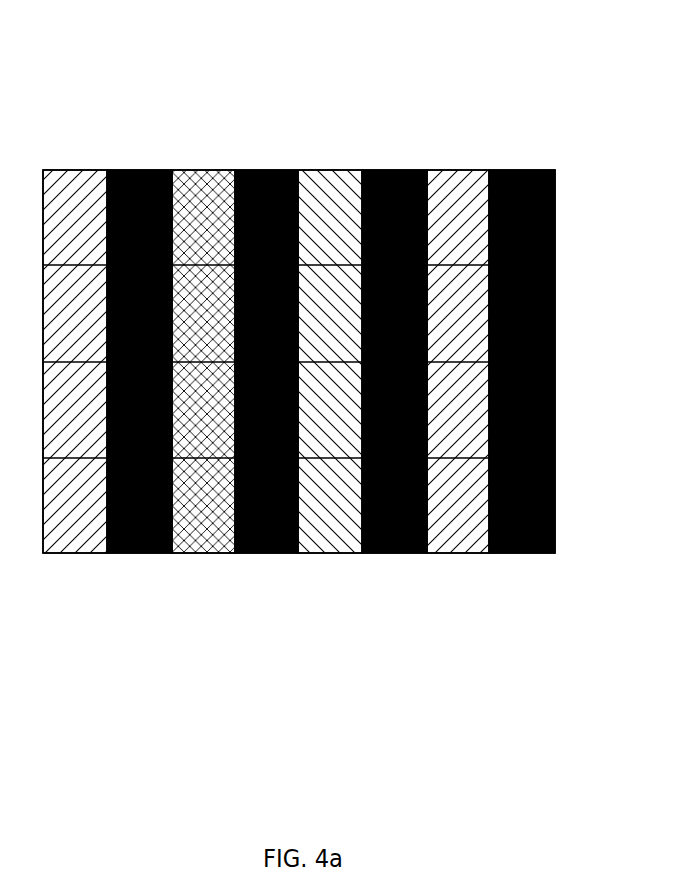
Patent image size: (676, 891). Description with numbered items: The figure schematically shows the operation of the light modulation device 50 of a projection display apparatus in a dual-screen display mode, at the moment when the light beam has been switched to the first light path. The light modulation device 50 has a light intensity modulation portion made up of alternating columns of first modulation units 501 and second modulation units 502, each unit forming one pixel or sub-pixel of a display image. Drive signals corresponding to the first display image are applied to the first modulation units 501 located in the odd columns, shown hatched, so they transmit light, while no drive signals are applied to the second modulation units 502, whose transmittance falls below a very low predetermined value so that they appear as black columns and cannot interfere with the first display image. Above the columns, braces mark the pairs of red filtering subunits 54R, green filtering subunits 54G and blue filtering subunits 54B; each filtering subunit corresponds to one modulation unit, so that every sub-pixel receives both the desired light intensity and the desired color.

The light modulation device 50 is at (252, 38).
The red filtering subunits 54R is at (77, 157).
The green filtering subunits 54G is at (267, 157).
The blue filtering subunits 54B is at (330, 153).
The first modulation units 501 is at (327, 553).
The second modulation units 502 is at (372, 553).